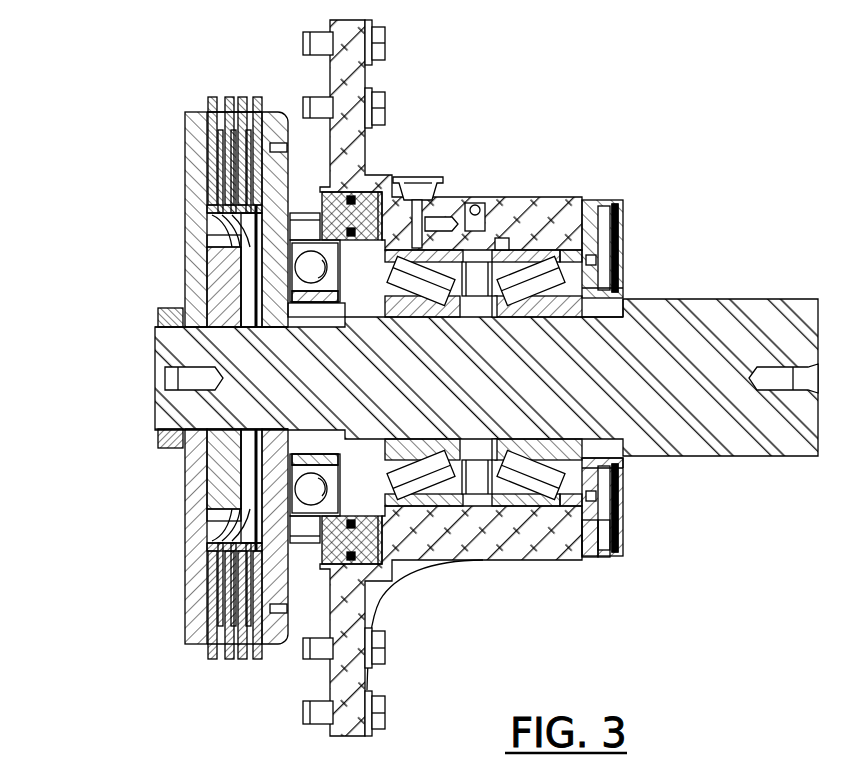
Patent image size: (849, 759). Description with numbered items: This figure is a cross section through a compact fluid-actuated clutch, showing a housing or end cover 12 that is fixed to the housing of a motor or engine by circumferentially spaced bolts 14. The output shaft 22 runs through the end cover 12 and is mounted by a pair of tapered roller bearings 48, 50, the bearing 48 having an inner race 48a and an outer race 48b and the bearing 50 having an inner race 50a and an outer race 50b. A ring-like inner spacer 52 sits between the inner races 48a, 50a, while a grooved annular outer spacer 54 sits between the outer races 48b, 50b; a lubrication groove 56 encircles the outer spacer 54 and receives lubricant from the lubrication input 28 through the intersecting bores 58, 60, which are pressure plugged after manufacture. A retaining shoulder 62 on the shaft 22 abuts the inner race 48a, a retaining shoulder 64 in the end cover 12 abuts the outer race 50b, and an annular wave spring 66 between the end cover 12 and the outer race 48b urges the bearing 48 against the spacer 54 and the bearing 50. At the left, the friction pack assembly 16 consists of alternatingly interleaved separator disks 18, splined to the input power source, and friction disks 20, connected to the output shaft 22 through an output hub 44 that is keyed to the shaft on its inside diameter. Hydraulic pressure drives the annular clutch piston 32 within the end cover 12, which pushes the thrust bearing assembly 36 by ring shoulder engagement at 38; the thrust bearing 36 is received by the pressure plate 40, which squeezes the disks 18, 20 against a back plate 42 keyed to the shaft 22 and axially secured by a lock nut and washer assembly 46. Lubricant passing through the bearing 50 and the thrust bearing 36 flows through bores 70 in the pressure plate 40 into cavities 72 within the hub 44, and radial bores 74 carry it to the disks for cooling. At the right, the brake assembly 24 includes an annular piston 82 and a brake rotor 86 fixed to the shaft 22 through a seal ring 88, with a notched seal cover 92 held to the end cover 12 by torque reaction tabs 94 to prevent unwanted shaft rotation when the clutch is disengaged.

The housing or end cover 12 is at (532, 190).
The bolts 14 is at (375, 45).
The friction pack assembly 16 is at (165, 85).
The separator disks 18 is at (212, 97).
The friction disks 20 is at (233, 97).
The output shaft 22 is at (710, 457).
The brake assembly 24 is at (632, 580).
The lubrication input 28 is at (417, 168).
The clutch piston 32 is at (368, 560).
The thrust bearing assembly 36 is at (301, 530).
The ring shoulder engagement 38 is at (335, 303).
The pressure plate 40 is at (287, 157).
The back plate 42 is at (185, 160).
The output hub 44 is at (210, 285).
The lock nut and washer assembly 46 is at (150, 315).
The tapered roller bearing 48 is at (520, 520).
The inner race 48a is at (545, 317).
The outer race 48b is at (552, 250).
The tapered roller bearing 50 is at (421, 432).
The inner race 50a is at (420, 317).
The outer race 50b is at (462, 248).
The inner spacer 52 is at (472, 312).
The outer spacer 54 is at (493, 303).
The lubrication groove 56 is at (490, 480).
The bore 58 is at (476, 203).
The bore 60 is at (500, 238).
The retaining shoulder 62 is at (590, 318).
The retaining shoulder 64 is at (417, 257).
The wave spring 66 is at (600, 250).
The bores 70 is at (290, 213).
The cavities 72 is at (225, 250).
The bores 74 is at (220, 225).
The annular piston 82 is at (560, 540).
The brake rotor 86 is at (590, 548).
The seal ring 88 is at (625, 470).
The notched seal cover 92 is at (606, 202).
The torque reaction tabs 94 is at (640, 540).